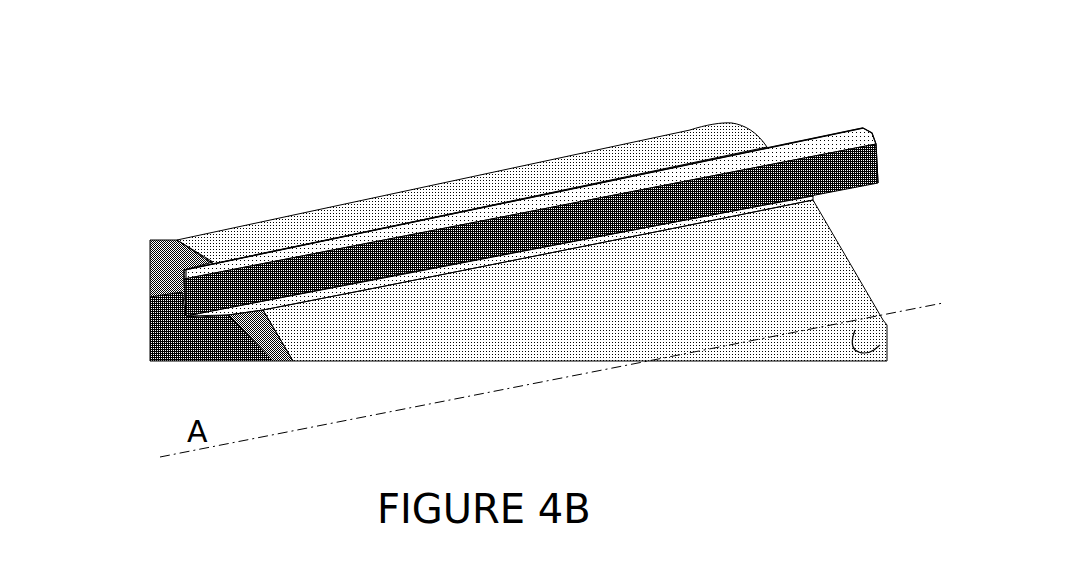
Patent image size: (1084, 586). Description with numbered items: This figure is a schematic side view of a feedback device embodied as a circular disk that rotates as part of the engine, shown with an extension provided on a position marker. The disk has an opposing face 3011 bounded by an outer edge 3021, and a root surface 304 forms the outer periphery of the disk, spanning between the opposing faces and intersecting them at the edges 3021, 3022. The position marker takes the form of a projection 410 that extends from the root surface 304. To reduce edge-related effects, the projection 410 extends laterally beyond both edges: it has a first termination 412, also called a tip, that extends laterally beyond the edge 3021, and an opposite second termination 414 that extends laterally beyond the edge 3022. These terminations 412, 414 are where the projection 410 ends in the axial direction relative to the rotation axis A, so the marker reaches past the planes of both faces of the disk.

The opposing face 3011 is at (173, 272).
The outer edge 3021 is at (173, 240).
The outer edge 3022 is at (847, 257).
The root surface 304 is at (297, 223).
The projection 410 is at (477, 215).
The first termination 412 is at (208, 302).
The second termination 414 is at (838, 138).